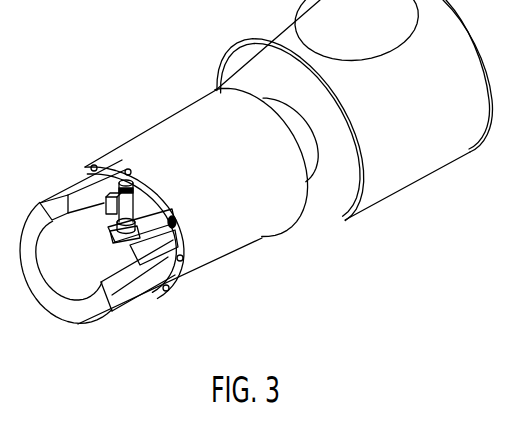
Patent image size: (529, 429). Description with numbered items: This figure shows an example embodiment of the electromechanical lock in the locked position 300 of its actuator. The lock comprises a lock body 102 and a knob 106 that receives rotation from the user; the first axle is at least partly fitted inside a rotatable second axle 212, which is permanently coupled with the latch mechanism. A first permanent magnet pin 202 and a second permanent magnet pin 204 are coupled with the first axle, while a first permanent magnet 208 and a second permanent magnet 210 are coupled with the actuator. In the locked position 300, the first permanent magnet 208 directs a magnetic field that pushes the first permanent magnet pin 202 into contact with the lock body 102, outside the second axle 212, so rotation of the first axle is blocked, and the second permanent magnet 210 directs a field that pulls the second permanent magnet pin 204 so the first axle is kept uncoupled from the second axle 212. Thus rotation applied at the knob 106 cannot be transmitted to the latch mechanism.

The locked position 300 is at (52, 81).
The lock body 102 is at (227, 261).
The knob 106 is at (415, 186).
The first permanent magnet pin 202 is at (181, 246).
The second permanent magnet pin 204 is at (122, 212).
The first permanent magnet 208 is at (152, 223).
The second permanent magnet 210 is at (124, 233).
The second axle 212 is at (122, 308).